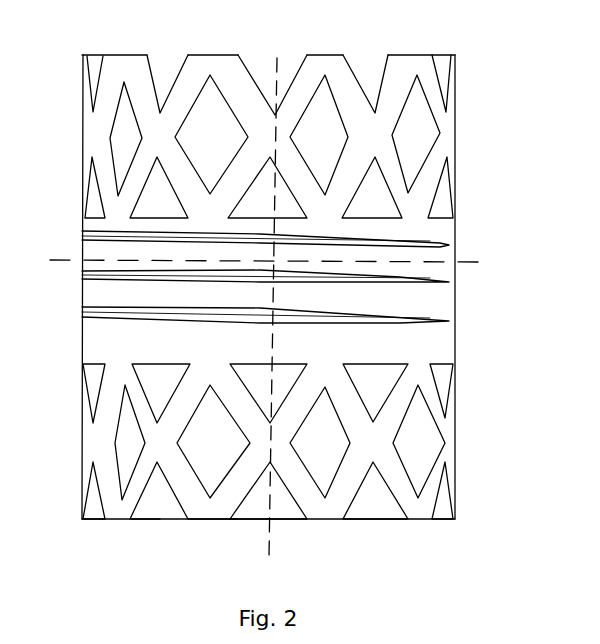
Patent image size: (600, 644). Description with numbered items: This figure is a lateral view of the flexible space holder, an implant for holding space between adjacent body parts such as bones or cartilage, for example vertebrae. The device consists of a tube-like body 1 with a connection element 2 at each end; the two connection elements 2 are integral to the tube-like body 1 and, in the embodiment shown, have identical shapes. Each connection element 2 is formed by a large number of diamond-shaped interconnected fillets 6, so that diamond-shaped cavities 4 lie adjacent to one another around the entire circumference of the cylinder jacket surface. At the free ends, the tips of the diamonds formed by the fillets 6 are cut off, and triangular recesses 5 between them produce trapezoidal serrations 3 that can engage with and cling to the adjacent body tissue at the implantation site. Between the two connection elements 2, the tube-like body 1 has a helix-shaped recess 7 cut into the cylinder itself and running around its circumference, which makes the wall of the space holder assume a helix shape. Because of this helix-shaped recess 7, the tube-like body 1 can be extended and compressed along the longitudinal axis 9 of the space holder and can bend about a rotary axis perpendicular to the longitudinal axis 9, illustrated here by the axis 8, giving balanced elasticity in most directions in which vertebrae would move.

The tube-like body 1 is at (82, 337).
The connection element 2 is at (84, 93).
The serration 3 is at (207, 522).
The diamond-shaped cavity 4 is at (212, 134).
The triangular recess 5 is at (170, 506).
The fillet 6 is at (347, 488).
The helix-shaped recess 7 is at (226, 317).
The axis 8 is at (61, 252).
The longitudinal axis 9 is at (271, 549).